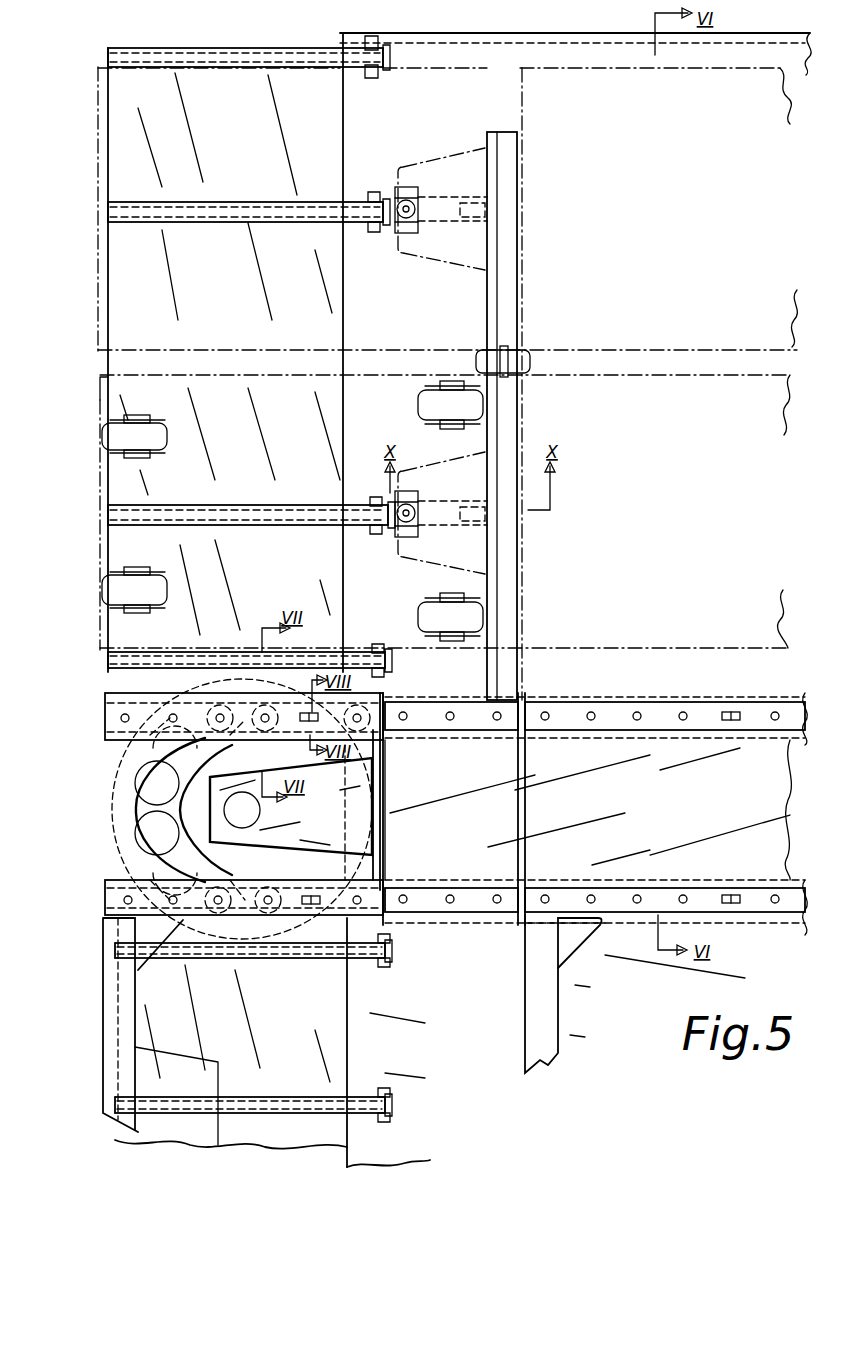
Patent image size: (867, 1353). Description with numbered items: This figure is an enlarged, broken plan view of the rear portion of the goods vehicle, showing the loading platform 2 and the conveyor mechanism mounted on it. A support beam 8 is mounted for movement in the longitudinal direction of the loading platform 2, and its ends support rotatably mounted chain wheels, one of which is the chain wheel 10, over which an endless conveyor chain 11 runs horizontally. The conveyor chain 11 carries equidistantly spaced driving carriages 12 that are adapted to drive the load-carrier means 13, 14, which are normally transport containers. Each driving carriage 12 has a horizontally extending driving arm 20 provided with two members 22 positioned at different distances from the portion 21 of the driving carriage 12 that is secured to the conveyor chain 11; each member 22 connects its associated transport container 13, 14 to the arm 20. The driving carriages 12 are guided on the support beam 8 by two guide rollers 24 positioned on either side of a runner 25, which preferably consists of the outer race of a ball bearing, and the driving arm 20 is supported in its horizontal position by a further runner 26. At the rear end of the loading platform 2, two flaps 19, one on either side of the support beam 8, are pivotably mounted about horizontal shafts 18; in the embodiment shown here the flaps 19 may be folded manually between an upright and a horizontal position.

The loading platform 2 is at (778, 52).
The support beam 8 is at (548, 778).
The chain wheel 10 is at (195, 848).
The endless conveyor chain 11 is at (148, 815).
The driving carriage 12 is at (443, 716).
The load-carrier means 13 is at (97, 152).
The load-carrier means 14 is at (98, 392).
The horizontal shaft 18 is at (372, 192).
The flap 19 is at (123, 260).
The driving arm 20 is at (518, 262).
The portion of the driving carriage 21 is at (112, 725).
The member 22 is at (475, 247).
The guide roller 24 is at (222, 735).
The runner 25 is at (265, 735).
The runner 26 is at (515, 368).